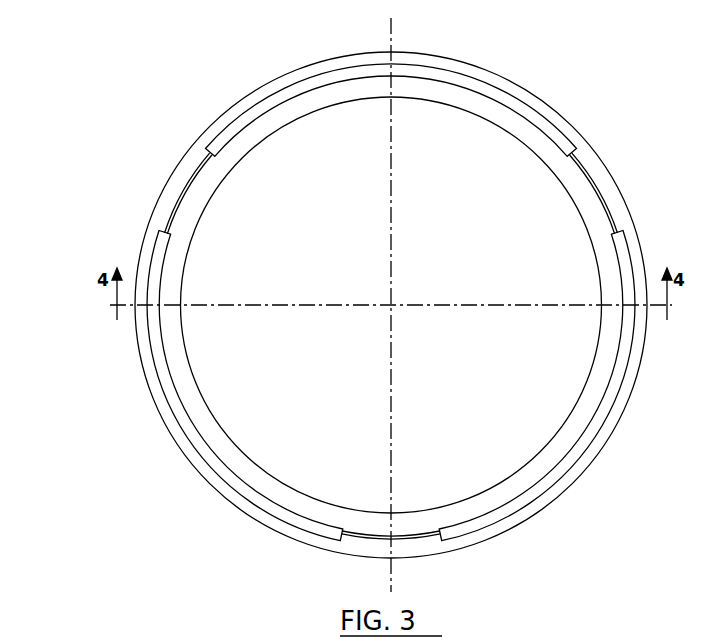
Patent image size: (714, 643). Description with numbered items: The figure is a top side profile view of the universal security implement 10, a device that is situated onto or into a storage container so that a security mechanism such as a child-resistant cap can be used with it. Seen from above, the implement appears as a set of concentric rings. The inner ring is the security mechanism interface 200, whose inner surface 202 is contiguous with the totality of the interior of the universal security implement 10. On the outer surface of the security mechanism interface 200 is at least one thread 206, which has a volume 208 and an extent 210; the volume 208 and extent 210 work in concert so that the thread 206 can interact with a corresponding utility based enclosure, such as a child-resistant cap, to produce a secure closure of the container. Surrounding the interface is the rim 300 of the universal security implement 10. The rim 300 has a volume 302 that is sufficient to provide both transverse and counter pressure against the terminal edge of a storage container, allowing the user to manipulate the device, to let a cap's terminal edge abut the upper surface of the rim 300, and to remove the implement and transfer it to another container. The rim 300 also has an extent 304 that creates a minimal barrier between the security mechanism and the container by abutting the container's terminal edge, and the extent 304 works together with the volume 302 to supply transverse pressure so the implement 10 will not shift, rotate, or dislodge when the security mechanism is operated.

The universal security implement 10 is at (105, 56).
The security mechanism interface 200 is at (153, 364).
The inner surface 202 is at (197, 390).
The thread 206 is at (225, 481).
The volume 208 is at (253, 554).
The extent 210 is at (289, 576).
The rim 300 is at (140, 263).
The volume 302 is at (138, 217).
The extent 304 is at (166, 149).